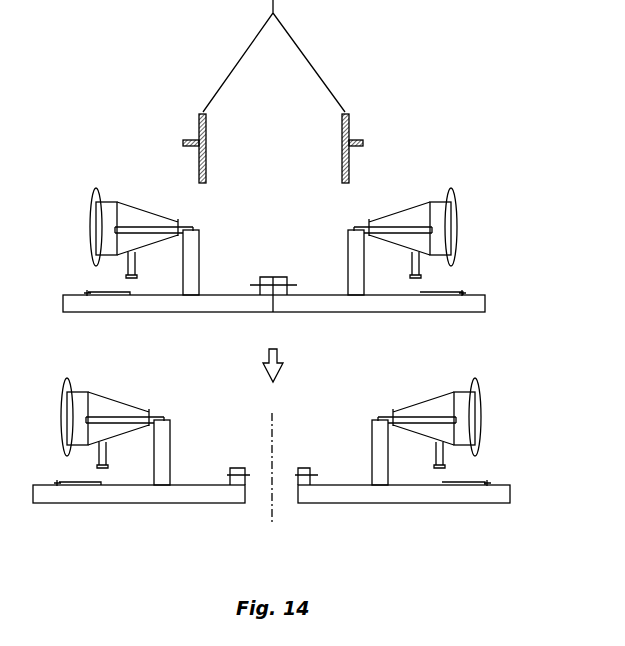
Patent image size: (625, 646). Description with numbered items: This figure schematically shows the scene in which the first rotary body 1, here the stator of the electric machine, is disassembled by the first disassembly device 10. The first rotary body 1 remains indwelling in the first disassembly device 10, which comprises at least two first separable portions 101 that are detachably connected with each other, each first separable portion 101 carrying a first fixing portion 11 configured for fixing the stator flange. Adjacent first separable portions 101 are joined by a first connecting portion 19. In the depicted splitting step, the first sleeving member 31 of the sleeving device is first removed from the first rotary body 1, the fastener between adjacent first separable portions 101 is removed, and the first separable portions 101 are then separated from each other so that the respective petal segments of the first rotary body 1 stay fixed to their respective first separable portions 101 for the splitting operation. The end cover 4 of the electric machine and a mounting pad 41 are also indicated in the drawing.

The first sleeving member 31 is at (206, 160).
The first rotary body 1 is at (93, 230).
The end cover 4 is at (88, 293).
The first separable portion 101 is at (198, 306).
The first disassembly device 10 is at (266, 323).
The first fixing portion 11 is at (63, 420).
The mounting pad 41 is at (57, 483).
The first connecting portion 19 is at (237, 468).